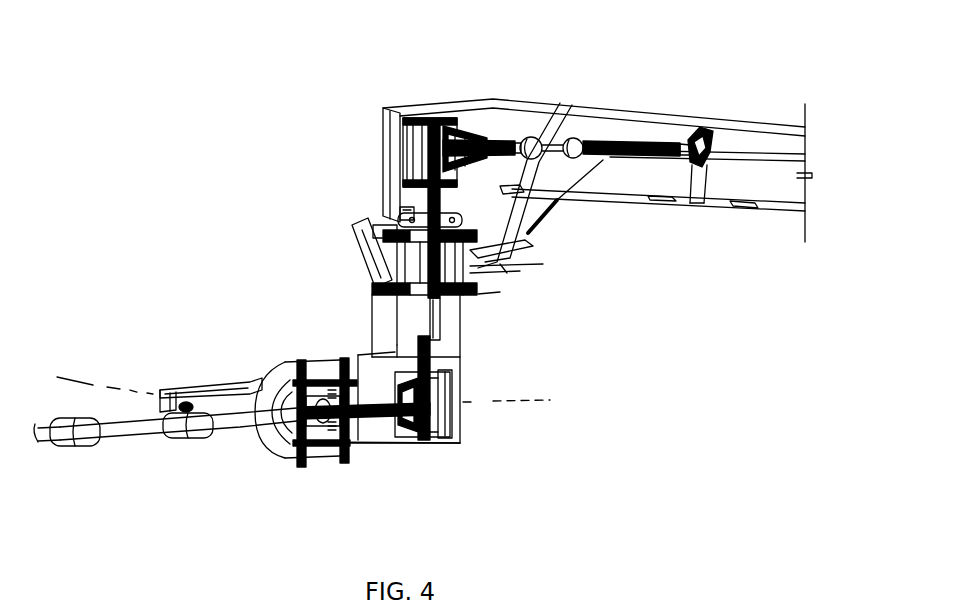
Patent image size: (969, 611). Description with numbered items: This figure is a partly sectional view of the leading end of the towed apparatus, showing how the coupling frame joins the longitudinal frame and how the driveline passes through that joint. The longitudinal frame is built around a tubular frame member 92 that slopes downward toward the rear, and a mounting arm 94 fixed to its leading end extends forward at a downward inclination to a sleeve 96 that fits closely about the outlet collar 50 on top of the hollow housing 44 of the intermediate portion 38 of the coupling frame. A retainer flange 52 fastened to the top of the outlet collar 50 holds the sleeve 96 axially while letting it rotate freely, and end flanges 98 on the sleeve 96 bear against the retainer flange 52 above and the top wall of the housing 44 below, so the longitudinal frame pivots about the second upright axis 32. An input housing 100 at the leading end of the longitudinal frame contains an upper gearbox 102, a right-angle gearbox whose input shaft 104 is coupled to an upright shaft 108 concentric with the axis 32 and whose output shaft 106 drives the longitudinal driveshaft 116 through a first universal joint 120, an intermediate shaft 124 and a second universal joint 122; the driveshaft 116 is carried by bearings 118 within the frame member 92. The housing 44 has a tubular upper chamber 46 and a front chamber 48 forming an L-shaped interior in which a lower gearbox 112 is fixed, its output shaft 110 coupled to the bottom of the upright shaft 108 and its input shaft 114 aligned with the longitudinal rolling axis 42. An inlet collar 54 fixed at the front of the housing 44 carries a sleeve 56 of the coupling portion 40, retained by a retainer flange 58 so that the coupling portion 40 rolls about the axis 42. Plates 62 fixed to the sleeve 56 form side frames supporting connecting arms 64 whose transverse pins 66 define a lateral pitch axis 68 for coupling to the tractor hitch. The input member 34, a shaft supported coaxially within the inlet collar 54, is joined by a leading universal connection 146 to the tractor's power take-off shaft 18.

The power take-off shaft 18 is at (63, 437).
The second upright axis 32 is at (445, 315).
The input member 34 is at (328, 456).
The intermediate portion 38 is at (437, 458).
The coupling portion 40 is at (255, 453).
The longitudinal rolling axis 42 is at (523, 402).
The hollow housing 44 is at (463, 348).
The upper chamber 46 is at (403, 325).
The front chamber 48 is at (373, 440).
The outlet collar 50 is at (503, 272).
The retainer flange 52 is at (392, 222).
The inlet collar 54 is at (293, 433).
The sleeve 56 is at (322, 378).
The retainer flange 58 is at (283, 460).
The plates 62 is at (262, 377).
The connecting arms 64 is at (200, 390).
The transverse pins 66 is at (153, 397).
The lateral pitch axis 68 is at (77, 380).
The tubular frame member 92 is at (641, 198).
The mounting arm 94 is at (528, 222).
The sleeve 96 is at (395, 258).
The end flanges 98 is at (490, 238).
The input housing 100 is at (395, 147).
The upper gearbox 102 is at (417, 117).
The input shaft 104 is at (410, 207).
The output shaft 106 is at (493, 143).
The upright shaft 108 is at (543, 267).
The output shaft 110 is at (467, 362).
The lower gearbox 112 is at (460, 430).
The input shaft 114 is at (368, 425).
The longitudinal driveshaft 116 is at (748, 157).
The bearings 118 is at (692, 137).
The first universal joint 120 is at (530, 146).
The second universal joint 122 is at (597, 130).
The intermediate shaft 124 is at (573, 148).
The leading universal connection 146 is at (108, 444).